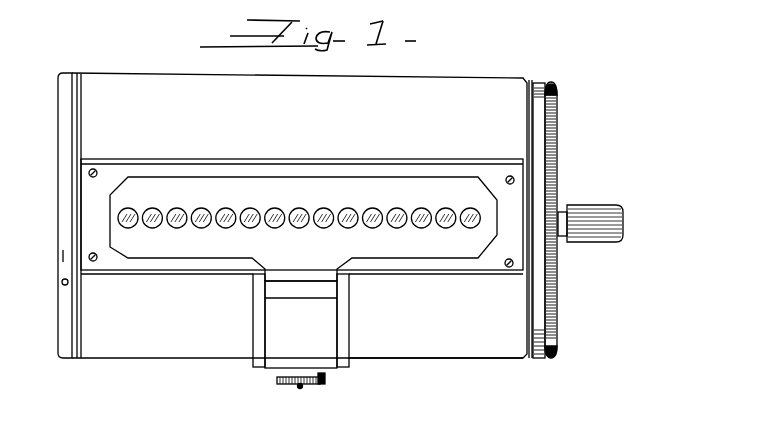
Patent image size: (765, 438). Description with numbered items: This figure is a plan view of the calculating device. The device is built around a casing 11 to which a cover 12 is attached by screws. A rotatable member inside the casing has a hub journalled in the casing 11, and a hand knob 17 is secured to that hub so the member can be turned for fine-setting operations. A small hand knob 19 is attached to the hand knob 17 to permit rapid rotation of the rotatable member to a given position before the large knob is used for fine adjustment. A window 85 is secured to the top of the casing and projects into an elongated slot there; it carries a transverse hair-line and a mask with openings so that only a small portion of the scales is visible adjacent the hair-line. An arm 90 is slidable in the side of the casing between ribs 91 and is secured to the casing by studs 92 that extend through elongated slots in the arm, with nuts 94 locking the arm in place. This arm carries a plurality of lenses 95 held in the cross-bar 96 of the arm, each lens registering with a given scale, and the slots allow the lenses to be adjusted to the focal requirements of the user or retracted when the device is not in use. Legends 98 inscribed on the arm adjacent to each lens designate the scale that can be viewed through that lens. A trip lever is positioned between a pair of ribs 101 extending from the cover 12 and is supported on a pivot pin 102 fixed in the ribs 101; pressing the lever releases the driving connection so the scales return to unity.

The casing 11 is at (492, 360).
The cover 12 is at (76, 130).
The hand knob 17 is at (557, 133).
The small hand knob 19 is at (585, 206).
The window 85 is at (425, 270).
The arm 90 is at (332, 337).
The ribs 91 is at (259, 368).
The studs 92 is at (302, 388).
The nuts 94 is at (326, 384).
The lenses 95 is at (256, 207).
The cross-bar 96 is at (430, 188).
The legends 98 is at (153, 248).
The ribs 101 is at (64, 256).
The pivot pin 102 is at (62, 282).